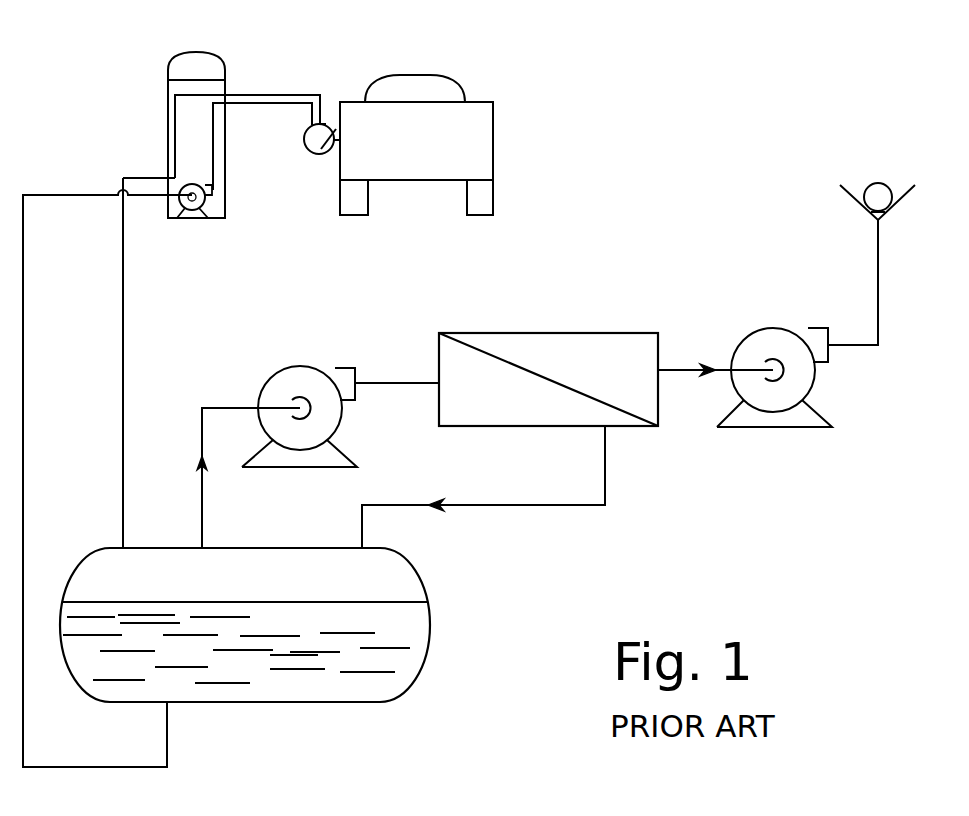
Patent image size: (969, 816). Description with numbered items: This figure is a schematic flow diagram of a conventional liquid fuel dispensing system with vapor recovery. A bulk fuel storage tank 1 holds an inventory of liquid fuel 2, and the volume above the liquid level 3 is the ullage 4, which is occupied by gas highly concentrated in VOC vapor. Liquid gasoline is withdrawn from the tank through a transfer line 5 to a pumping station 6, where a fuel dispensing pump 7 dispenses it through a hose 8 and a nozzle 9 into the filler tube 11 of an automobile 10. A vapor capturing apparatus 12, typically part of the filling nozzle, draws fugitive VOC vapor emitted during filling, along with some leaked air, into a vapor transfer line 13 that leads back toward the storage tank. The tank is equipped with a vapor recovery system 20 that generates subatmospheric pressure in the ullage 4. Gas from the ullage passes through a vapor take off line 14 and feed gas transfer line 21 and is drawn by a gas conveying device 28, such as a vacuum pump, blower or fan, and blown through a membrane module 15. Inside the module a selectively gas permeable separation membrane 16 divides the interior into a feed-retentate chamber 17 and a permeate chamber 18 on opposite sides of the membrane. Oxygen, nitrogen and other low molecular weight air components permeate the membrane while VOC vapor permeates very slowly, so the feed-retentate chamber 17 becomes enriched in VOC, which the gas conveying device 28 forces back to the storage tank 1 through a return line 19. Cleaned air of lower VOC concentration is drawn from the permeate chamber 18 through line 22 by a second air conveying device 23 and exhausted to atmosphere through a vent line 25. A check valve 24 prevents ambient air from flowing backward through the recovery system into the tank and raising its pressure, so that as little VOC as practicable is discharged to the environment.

The bulk fuel storage tank 1 is at (410, 557).
The liquid fuel 2 is at (397, 620).
The liquid level 3 is at (380, 598).
The ullage 4 is at (265, 560).
The transfer line 5 is at (170, 742).
The pumping station 6 is at (182, 50).
The fuel dispensing pump 7 is at (182, 187).
The hose 8 is at (277, 105).
The nozzle 9 is at (313, 155).
The automobile 10 is at (494, 106).
The filler tube 11 is at (333, 150).
The vapor capturing apparatus 12 is at (330, 125).
The vapor transfer line 13 is at (128, 177).
The vapor take off line 14 is at (213, 406).
The membrane module 15 is at (479, 333).
The selectively gas permeable separation membrane 16 is at (527, 370).
The feed-retentate chamber 17 is at (553, 413).
The permeate chamber 18 is at (608, 348).
The return line 19 is at (522, 507).
The vapor recovery system 20 is at (687, 449).
The feed gas transfer line 21 is at (396, 383).
The line 22 is at (680, 368).
The air conveying device 23 is at (758, 328).
The check valve 24 is at (870, 183).
The vent line 25 is at (878, 245).
The gas conveying device 28 is at (278, 368).